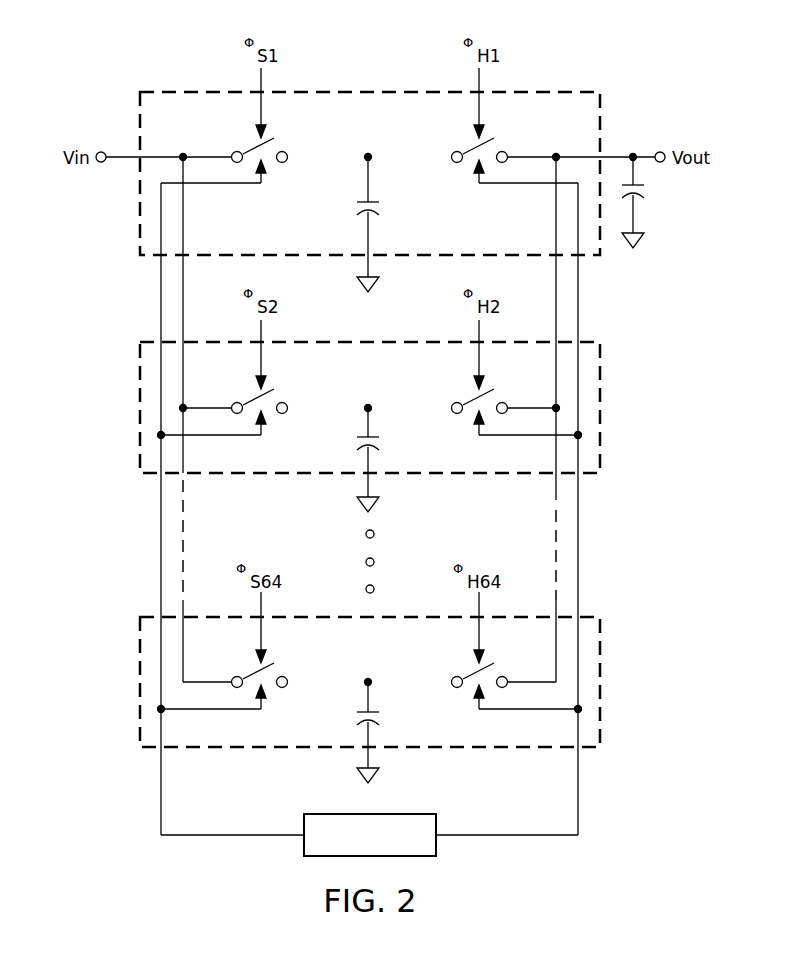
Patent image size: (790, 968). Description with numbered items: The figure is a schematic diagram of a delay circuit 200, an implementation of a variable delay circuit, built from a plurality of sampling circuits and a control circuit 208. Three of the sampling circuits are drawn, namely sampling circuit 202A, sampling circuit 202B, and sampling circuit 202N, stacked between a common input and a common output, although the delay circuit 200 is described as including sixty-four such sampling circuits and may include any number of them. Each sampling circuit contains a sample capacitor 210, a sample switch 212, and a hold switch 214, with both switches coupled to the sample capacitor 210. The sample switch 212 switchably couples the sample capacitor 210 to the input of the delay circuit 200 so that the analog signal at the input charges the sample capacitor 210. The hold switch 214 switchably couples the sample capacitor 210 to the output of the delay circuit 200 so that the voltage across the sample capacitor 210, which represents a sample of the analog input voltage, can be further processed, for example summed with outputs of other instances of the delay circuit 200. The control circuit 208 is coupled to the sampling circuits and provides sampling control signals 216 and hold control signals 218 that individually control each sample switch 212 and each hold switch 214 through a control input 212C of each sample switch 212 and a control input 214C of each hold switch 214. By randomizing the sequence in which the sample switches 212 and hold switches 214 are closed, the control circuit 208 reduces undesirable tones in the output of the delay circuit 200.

The delay circuit 200 is at (190, 57).
The sampling circuit 202A is at (136, 120).
The sampling circuit 202B is at (136, 393).
The sampling circuit 202N is at (136, 697).
The sample switch 212 is at (250, 147).
The hold switch 214 is at (470, 147).
The control input 212C is at (260, 186).
The control input 214C is at (481, 186).
The sample capacitor 210 is at (357, 204).
The control circuit 208 is at (405, 813).
The sampling control signals 216 is at (161, 791).
The hold control signals 218 is at (578, 791).